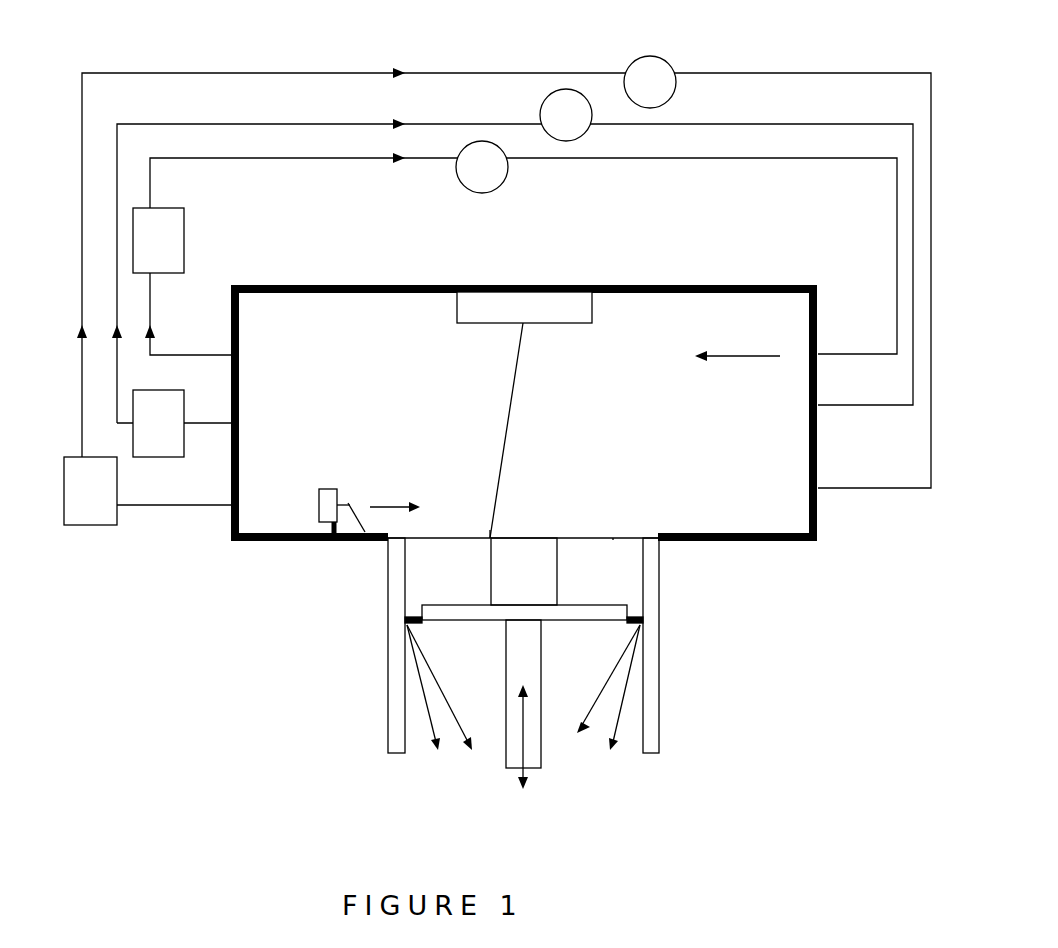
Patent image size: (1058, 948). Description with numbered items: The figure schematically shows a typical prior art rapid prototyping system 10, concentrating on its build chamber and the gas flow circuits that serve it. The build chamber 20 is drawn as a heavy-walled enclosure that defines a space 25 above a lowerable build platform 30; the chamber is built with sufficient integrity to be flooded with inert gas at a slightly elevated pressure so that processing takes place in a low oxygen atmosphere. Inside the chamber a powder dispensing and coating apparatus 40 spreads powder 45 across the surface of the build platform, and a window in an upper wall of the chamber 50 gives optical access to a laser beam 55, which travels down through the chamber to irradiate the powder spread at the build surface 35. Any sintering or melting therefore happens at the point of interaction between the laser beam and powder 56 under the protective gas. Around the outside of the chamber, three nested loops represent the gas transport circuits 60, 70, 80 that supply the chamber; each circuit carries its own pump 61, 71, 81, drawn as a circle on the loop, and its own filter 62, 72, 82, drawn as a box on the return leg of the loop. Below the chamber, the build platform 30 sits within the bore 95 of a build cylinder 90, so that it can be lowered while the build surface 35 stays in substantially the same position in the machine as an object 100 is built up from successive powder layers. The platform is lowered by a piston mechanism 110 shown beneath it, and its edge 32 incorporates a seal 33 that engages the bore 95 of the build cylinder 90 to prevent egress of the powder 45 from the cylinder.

The rapid prototyping system 10 is at (151, 642).
The build chamber 20 is at (820, 532).
The space 25 is at (647, 313).
The build platform 30 is at (590, 605).
The edge 32 is at (418, 608).
The seal 33 is at (630, 606).
The build surface 35 is at (613, 535).
The powder dispensing and coating apparatus 40 is at (319, 506).
The powder 45 is at (350, 507).
The window in an upper wall of the chamber 50 is at (524, 307).
The laser beam 55 is at (510, 423).
The point of interaction between the laser beam and powder 56 is at (498, 537).
The gas transport circuit 60 is at (868, 70).
The pump 61 is at (657, 65).
The filter 62 is at (147, 491).
The gas transport circuit 70 is at (853, 120).
The pump 71 is at (550, 112).
The filter 72 is at (182, 423).
The gas transport circuit 80 is at (820, 155).
The pump 81 is at (490, 180).
The filter 82 is at (158, 240).
The build cylinder 90 is at (655, 730).
The bore 95 is at (640, 743).
The object 100 is at (524, 571).
The piston mechanism 110 is at (508, 775).